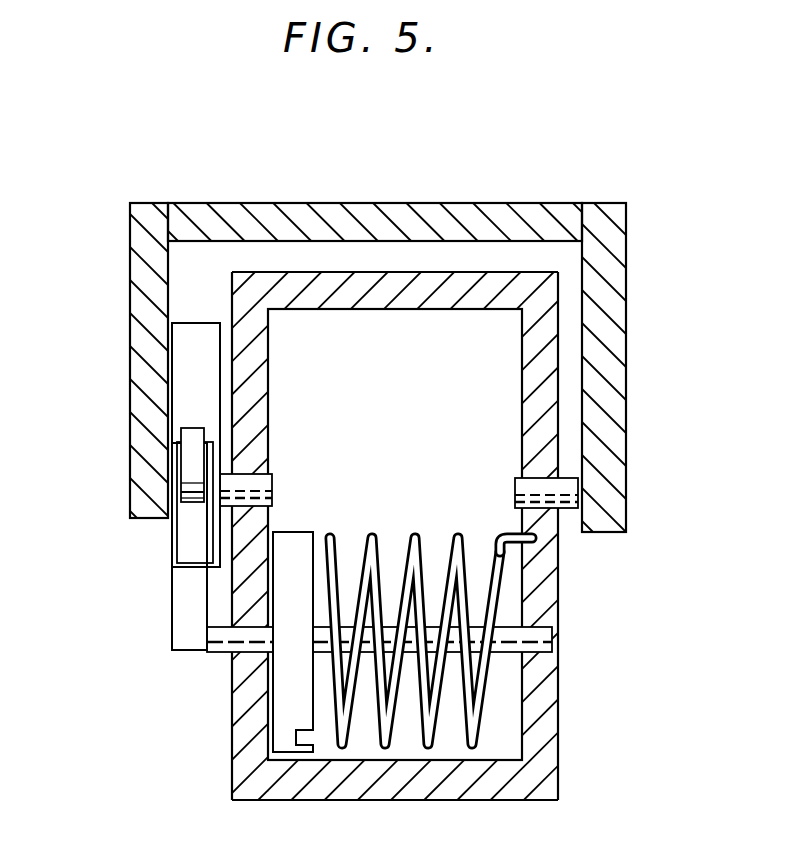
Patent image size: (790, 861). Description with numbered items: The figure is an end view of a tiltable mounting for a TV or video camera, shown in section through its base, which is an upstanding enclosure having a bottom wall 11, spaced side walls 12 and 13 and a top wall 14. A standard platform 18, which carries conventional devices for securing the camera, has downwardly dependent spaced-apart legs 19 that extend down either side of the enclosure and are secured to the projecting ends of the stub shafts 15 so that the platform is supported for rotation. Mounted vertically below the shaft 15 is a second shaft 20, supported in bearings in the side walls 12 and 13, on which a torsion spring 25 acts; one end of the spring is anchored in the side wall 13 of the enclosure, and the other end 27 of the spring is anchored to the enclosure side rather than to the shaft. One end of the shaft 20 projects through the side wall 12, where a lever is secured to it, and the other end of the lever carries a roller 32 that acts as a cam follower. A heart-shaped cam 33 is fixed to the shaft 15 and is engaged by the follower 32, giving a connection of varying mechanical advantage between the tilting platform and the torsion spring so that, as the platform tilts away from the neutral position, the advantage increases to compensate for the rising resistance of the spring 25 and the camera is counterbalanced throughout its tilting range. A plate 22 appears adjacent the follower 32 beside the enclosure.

The bottom wall 11 is at (383, 793).
The side wall 12 is at (238, 732).
The side wall 13 is at (540, 735).
The top wall 14 is at (363, 302).
The stub shaft 15 is at (235, 492).
The platform 18 is at (305, 208).
The legs 19 is at (132, 288).
The second shaft 20 is at (505, 640).
The plate 22 is at (185, 596).
The torsion spring 25 is at (370, 535).
The other end of the spring 27 is at (532, 541).
The roller 32 is at (190, 436).
The heart-shaped cam 33 is at (185, 350).